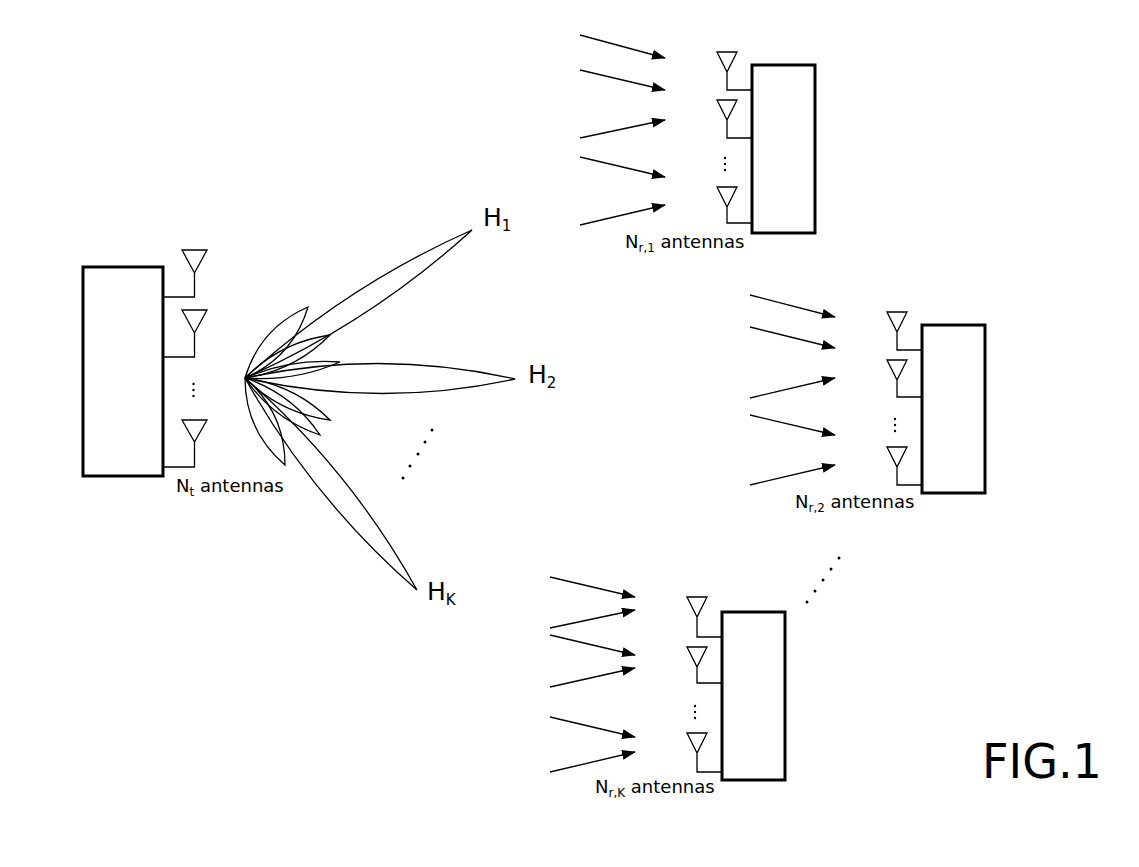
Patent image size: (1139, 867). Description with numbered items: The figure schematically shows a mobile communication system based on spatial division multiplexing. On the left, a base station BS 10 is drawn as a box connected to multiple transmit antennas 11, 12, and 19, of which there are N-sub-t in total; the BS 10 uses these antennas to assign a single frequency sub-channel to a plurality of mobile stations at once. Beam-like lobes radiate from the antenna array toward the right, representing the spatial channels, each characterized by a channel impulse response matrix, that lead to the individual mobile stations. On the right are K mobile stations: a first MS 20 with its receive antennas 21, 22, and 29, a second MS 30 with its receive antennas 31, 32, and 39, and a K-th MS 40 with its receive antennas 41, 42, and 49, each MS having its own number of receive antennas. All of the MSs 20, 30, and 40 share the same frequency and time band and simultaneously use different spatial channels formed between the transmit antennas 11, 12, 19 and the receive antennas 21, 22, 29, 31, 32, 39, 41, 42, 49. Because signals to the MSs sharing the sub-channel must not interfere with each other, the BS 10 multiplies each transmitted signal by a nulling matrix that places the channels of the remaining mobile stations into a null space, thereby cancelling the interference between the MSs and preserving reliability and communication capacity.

The BS 10 is at (122, 267).
The transmit antenna 11 is at (207, 262).
The transmit antenna 12 is at (207, 322).
The transmit antenna 19 is at (207, 432).
The MS 20 is at (784, 65).
The receive antenna 21 is at (716, 62).
The receive antenna 22 is at (716, 110).
The receive antenna 29 is at (716, 197).
The MS 30 is at (953, 325).
The receive antenna 31 is at (886, 322).
The receive antenna 32 is at (886, 370).
The receive antenna 39 is at (886, 457).
The MS 40 is at (753, 611).
The receive antenna 41 is at (686, 608).
The receive antenna 42 is at (686, 657).
The receive antenna 49 is at (686, 743).